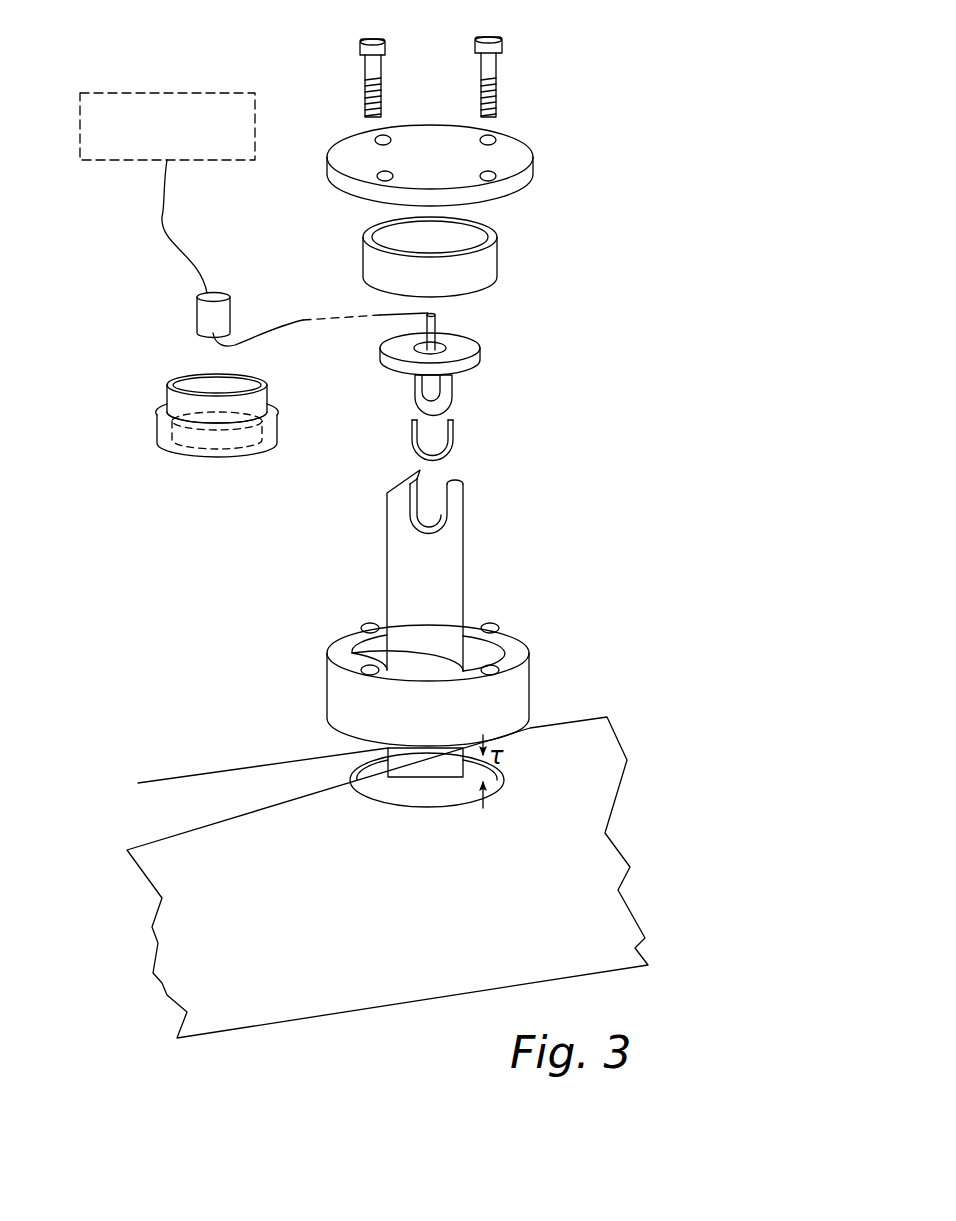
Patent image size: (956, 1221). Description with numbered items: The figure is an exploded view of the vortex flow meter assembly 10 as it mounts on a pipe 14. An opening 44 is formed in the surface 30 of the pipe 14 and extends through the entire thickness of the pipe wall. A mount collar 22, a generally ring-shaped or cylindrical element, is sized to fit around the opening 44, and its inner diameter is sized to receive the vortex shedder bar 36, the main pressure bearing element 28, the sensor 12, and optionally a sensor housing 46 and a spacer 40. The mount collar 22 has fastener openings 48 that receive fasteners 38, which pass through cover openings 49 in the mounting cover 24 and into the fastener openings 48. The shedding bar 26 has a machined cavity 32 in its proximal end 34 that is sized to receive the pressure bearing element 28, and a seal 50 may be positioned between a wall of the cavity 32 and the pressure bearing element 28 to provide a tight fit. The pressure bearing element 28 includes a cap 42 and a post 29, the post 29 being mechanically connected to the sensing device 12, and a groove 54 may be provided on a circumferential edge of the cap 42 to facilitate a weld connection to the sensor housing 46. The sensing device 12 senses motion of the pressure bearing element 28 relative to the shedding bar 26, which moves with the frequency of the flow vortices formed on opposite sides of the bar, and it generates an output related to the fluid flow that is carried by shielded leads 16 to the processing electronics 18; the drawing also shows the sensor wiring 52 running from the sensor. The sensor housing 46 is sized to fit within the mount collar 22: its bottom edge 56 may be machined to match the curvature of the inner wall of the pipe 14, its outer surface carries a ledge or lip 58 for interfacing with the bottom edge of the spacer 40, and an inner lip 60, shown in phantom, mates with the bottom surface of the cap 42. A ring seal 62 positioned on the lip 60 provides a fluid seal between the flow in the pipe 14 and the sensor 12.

The flow meter assembly 10 is at (588, 208).
The sensing device 12 is at (230, 313).
The pipe 14 is at (230, 782).
The leads 16 is at (158, 228).
The processing electronics 18 is at (210, 84).
The mount collar 22 is at (553, 663).
The mounting cover 24 is at (342, 182).
The shedding bar 26 is at (477, 552).
The pressure bearing element 28 is at (443, 397).
The post 29 is at (435, 313).
The surface 30 is at (583, 745).
The cavity 32 is at (432, 503).
The proximal end 34 is at (476, 484).
The vortex shedder bar 36 is at (385, 758).
The fastener 38 is at (378, 38).
The spacer 40 is at (505, 255).
The cap 42 is at (468, 345).
The opening 44 is at (415, 788).
The sensor housing 46 is at (191, 447).
The fastener openings 48 is at (487, 627).
The cover openings 49 is at (393, 175).
The seal 50 is at (458, 443).
The wire 52 is at (380, 318).
The groove 54 is at (400, 367).
The bottom edge 56 is at (243, 455).
The lip 58 is at (185, 422).
The inner lip 60 is at (217, 450).
The ring seal 62 is at (177, 450).